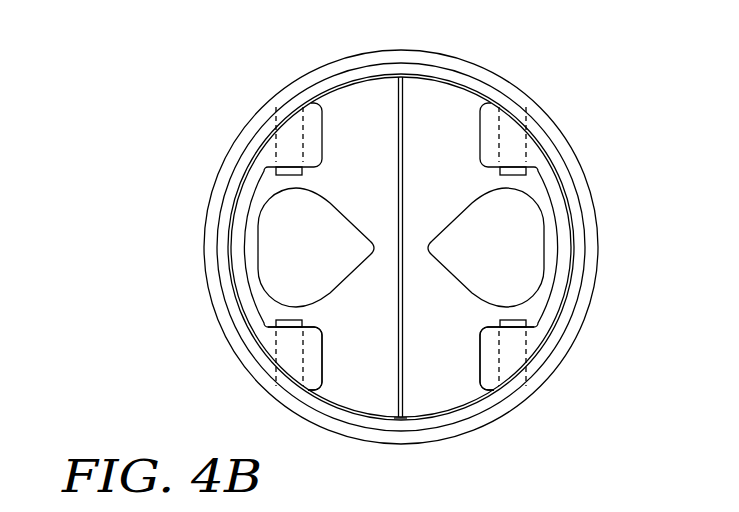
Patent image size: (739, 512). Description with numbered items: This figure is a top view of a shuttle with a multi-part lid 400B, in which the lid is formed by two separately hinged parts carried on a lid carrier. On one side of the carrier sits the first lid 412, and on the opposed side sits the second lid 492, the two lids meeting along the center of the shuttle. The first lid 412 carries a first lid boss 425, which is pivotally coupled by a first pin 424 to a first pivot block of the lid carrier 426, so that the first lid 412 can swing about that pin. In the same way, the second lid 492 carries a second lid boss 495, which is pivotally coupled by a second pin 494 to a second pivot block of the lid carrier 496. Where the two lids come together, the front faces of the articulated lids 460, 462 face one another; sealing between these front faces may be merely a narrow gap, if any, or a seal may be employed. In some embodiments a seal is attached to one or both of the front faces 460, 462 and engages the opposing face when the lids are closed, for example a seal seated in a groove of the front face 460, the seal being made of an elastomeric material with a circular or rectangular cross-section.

The shuttle with a multi-part lid (top view) 400B is at (240, 91).
The first lid 412 is at (378, 391).
The second lid 492 is at (460, 121).
The first lid boss 425 is at (321, 261).
The second lid boss 495 is at (522, 261).
The first pin 424 is at (277, 321).
The second pin 494 is at (525, 321).
The first pivot block of the lid carrier 426 is at (312, 364).
The second pivot block of the lid carrier 496 is at (490, 364).
The front face of the first articulated lid 460 is at (401, 407).
The front face of the second articulated lid 462 is at (399, 84).